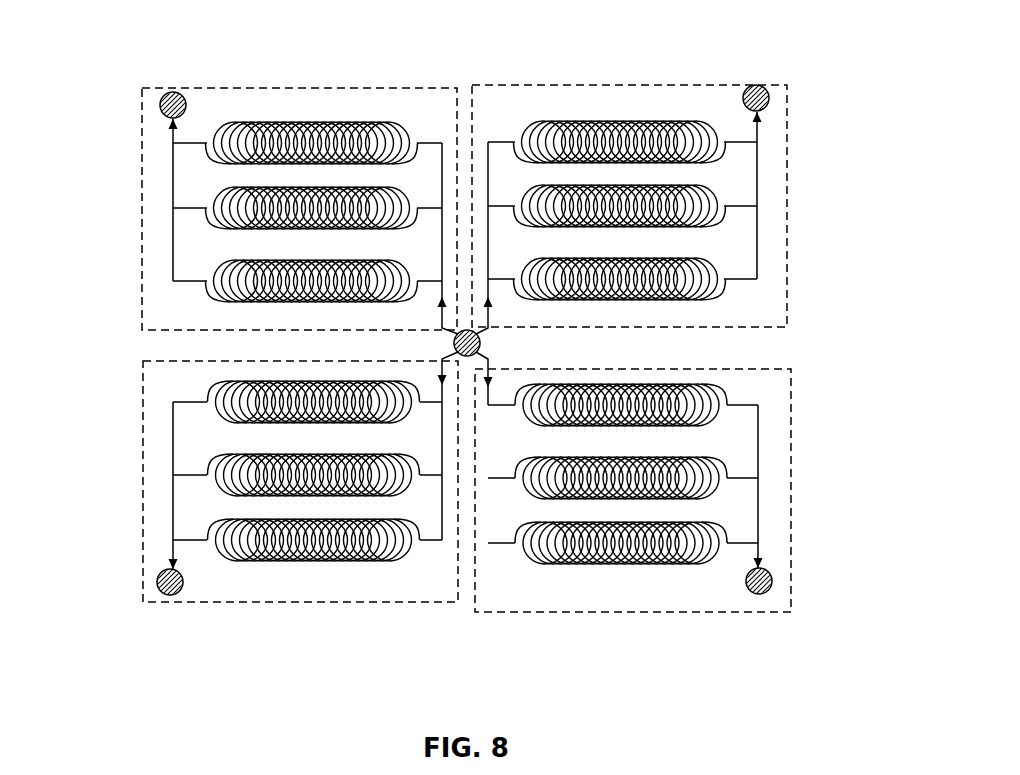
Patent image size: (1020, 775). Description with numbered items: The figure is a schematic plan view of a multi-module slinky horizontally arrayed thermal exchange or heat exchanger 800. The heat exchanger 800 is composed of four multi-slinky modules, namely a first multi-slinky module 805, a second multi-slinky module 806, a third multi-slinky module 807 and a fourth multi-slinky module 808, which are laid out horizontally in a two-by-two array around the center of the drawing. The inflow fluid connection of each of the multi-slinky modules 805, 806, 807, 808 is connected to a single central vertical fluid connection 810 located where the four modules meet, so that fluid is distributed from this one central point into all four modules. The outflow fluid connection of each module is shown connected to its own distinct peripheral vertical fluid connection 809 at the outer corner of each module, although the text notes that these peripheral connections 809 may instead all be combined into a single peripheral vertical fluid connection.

The multi-module slinky horizontally arrayed heat exchanger 800 is at (486, 697).
The first multi-slinky module 805 is at (141, 177).
The second multi-slinky module 806 is at (790, 176).
The third multi-slinky module 807 is at (140, 470).
The fourth multi-slinky module 808 is at (795, 493).
The peripheral vertical fluid connection 809 is at (160, 101).
The central vertical fluid connection 810 is at (479, 341).